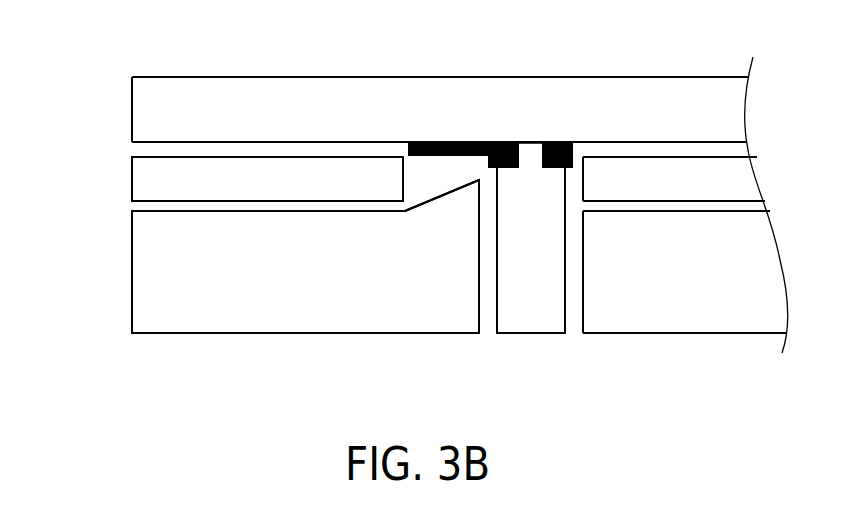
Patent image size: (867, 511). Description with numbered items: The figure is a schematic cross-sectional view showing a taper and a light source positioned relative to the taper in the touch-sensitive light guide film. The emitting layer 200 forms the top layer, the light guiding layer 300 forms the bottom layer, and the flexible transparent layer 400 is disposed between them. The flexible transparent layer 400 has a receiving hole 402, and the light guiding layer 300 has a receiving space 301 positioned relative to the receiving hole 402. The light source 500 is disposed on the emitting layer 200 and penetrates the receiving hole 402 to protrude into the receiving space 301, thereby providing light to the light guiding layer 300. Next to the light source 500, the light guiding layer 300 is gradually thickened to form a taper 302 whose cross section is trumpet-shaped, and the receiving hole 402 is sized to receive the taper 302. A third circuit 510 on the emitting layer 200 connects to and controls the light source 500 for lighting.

The emitting layer 200 is at (166, 113).
The flexible transparent layer 400 is at (166, 180).
The light guiding layer 300 is at (166, 268).
The taper 302 is at (477, 266).
The receiving space 301 is at (491, 327).
The light source 500 is at (538, 318).
The third circuit 510 is at (453, 142).
The receiving hole 402 is at (581, 183).